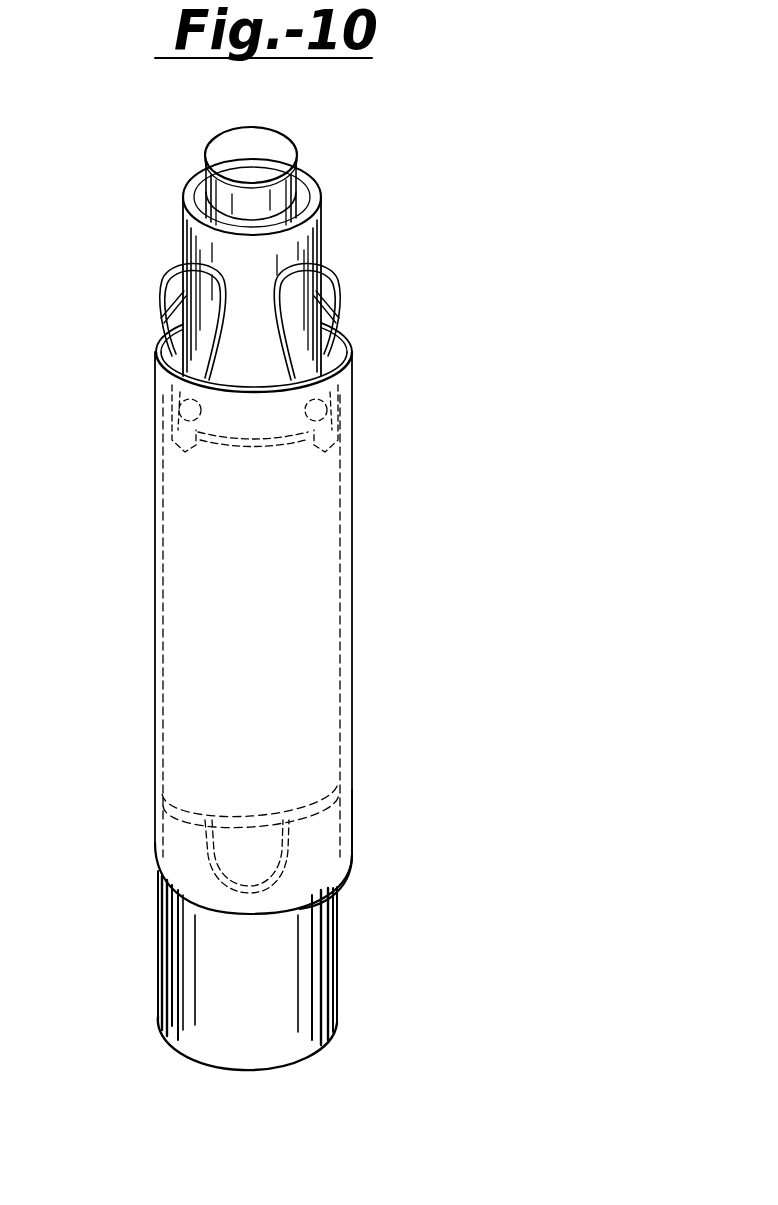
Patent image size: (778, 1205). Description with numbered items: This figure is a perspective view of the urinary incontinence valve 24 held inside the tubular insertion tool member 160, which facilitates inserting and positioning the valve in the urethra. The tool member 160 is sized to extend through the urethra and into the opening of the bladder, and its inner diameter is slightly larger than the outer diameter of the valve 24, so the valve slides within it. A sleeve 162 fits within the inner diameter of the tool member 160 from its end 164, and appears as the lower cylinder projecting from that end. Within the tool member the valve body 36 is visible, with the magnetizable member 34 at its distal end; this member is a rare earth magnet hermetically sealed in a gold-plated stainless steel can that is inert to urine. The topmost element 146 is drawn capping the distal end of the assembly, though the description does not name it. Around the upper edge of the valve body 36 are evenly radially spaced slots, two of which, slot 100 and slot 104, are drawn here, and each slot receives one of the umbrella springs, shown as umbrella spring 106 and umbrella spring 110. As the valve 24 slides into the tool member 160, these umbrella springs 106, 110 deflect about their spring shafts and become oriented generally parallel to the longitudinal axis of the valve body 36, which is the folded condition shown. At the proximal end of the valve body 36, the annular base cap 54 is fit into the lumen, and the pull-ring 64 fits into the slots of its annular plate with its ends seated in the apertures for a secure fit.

The urinary incontinence valve 24 is at (170, 242).
The magnetizable member 34 is at (182, 226).
The valve body 36 is at (160, 612).
The annular base cap 54 is at (178, 806).
The pull-ring 64 is at (207, 857).
The slot 100 is at (157, 448).
The slot 104 is at (347, 448).
The umbrella spring 106 is at (163, 273).
The umbrella spring 110 is at (333, 267).
The cap 146 is at (287, 147).
The tubular insertion tool member 160 is at (350, 825).
The sleeve 162 is at (337, 998).
The end 164 is at (343, 872).